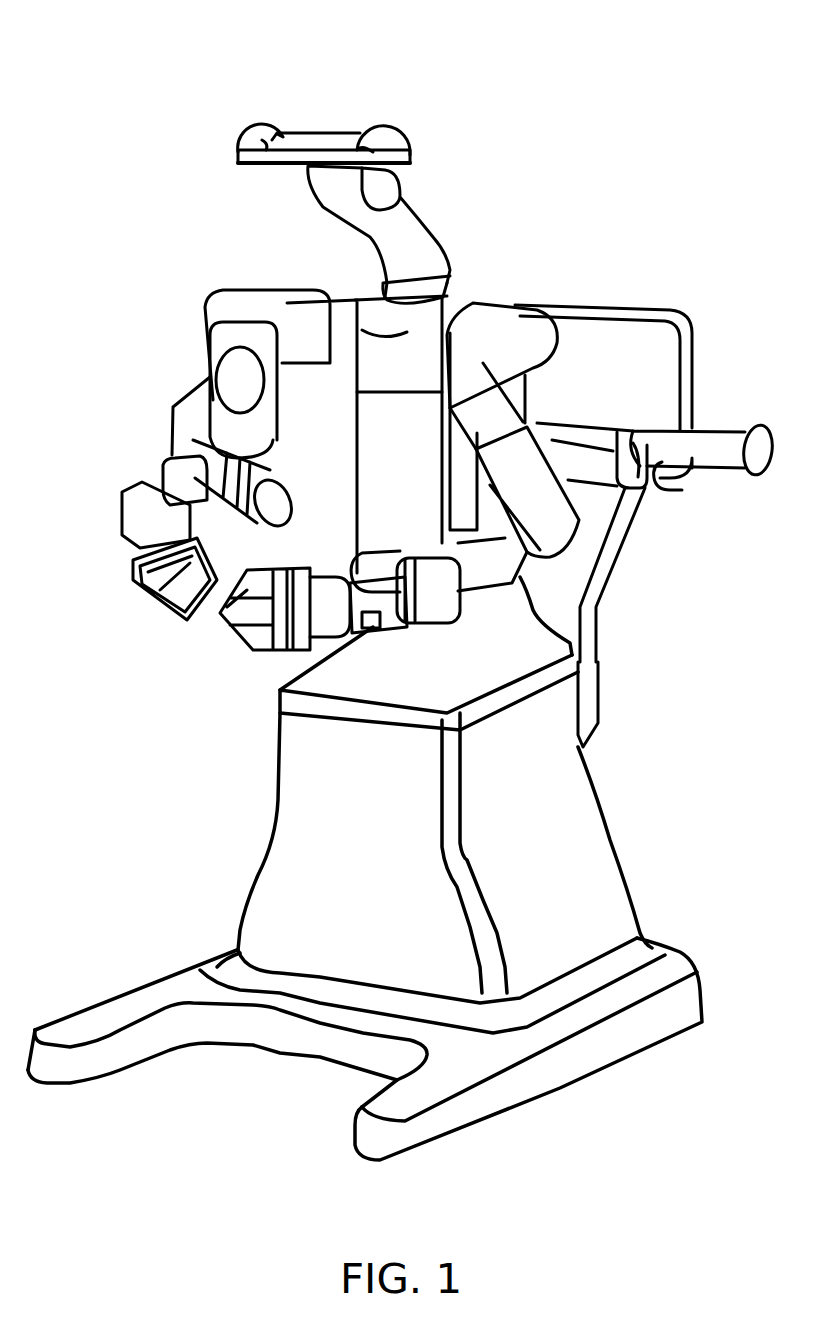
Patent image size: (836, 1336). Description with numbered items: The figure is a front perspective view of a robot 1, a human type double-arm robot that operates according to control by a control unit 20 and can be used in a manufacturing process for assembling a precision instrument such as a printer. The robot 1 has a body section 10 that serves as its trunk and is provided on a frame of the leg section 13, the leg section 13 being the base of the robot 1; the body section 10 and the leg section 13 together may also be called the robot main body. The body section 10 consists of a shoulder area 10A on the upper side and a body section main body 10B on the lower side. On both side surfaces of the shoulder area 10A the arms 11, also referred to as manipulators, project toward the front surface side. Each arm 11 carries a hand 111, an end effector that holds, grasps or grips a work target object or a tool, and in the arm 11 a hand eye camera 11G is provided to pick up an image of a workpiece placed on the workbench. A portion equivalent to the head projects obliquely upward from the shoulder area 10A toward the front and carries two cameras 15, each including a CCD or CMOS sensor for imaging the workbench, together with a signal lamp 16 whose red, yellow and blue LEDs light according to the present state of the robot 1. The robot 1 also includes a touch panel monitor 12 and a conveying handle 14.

The robot 1 is at (600, 87).
The body section 10 is at (468, 363).
The shoulder area 10A is at (420, 350).
The body section main body 10B is at (403, 433).
The arm 11 is at (157, 417).
The hand 111 is at (140, 603).
The hand eye camera 11G is at (368, 630).
The touch panel monitor 12 is at (620, 347).
The leg section 13 is at (240, 920).
The conveying handle 14 is at (714, 424).
The camera 15 is at (257, 128).
The signal lamp 16 is at (298, 145).
The control unit 20 is at (603, 907).